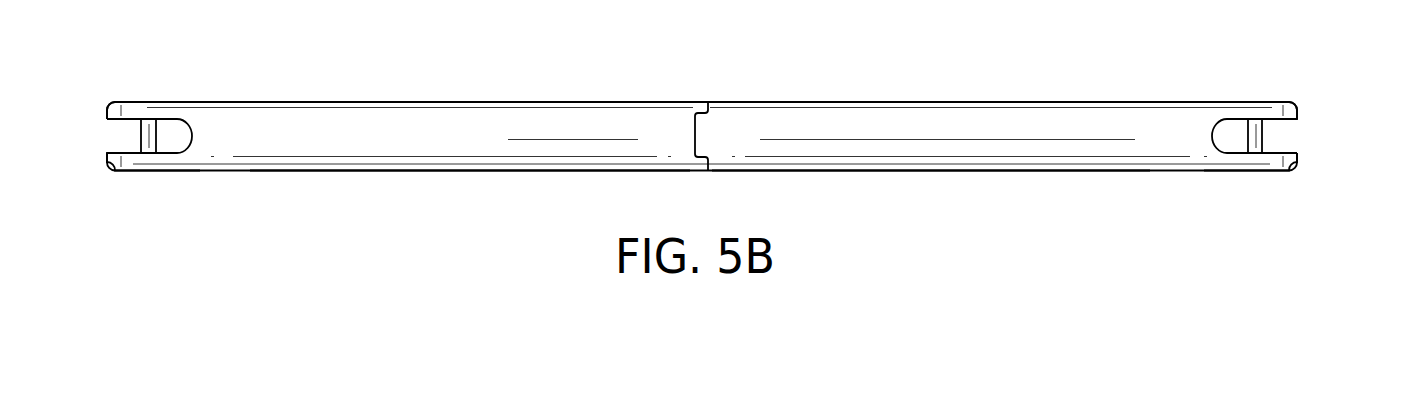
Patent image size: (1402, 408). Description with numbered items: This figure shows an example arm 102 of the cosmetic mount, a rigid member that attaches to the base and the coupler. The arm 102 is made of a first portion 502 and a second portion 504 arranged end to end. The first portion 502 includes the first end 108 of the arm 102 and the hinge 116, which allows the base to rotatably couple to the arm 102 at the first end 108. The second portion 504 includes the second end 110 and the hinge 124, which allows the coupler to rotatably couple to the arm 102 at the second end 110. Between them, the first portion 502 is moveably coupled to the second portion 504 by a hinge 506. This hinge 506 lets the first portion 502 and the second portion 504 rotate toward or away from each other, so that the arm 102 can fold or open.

The arm 102 is at (878, 48).
The first end 108 is at (165, 101).
The second end 110 is at (1256, 101).
The hinge 116 is at (141, 133).
The hinge 124 is at (1262, 134).
The first portion 502 is at (445, 119).
The second portion 504 is at (1042, 120).
The hinge 506 is at (700, 132).